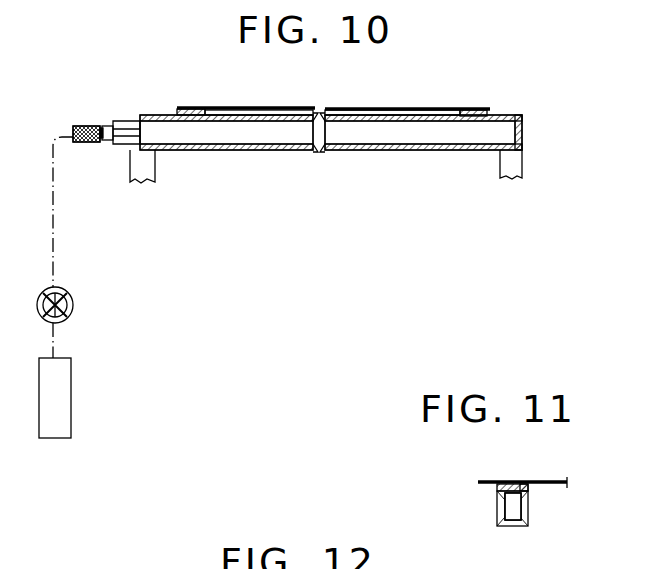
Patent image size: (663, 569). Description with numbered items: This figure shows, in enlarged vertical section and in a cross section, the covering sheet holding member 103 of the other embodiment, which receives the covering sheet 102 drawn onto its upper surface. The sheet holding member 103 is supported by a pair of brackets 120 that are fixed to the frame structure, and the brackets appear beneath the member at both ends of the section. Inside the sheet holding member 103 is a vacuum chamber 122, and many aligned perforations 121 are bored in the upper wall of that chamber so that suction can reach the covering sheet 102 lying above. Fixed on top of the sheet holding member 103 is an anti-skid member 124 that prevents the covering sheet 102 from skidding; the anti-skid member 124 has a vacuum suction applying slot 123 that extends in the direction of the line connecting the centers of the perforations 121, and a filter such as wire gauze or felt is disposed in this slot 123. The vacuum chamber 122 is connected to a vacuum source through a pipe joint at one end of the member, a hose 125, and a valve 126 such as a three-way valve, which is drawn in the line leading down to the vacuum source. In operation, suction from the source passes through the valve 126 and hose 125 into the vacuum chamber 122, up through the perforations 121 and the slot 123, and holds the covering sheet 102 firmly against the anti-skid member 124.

In FIG. 10, the covering sheet 102 is at (402, 107).
In FIG. 11, the covering sheet 102 is at (497, 481).
In FIG. 10, the sheet holding member 103 is at (351, 96).
In FIG. 10, the brackets 120 is at (145, 163).
In FIG. 10, the perforations 121 is at (438, 122).
In FIG. 11, the perforations 121 is at (504, 503).
In FIG. 10, the vacuum chamber 122 is at (283, 136).
In FIG. 11, the vacuum chamber 122 is at (515, 516).
In FIG. 10, the vacuum suction applying slot 123 is at (222, 106).
In FIG. 11, the vacuum suction applying slot 123 is at (512, 482).
In FIG. 10, the anti-skid member 124 is at (487, 113).
In FIG. 11, the anti-skid member 124 is at (530, 486).
In FIG. 10, the hose 125 is at (80, 125).
In FIG. 10, the valve 126 is at (73, 290).